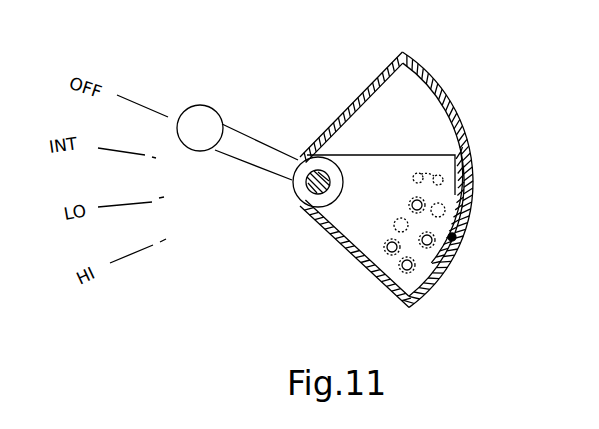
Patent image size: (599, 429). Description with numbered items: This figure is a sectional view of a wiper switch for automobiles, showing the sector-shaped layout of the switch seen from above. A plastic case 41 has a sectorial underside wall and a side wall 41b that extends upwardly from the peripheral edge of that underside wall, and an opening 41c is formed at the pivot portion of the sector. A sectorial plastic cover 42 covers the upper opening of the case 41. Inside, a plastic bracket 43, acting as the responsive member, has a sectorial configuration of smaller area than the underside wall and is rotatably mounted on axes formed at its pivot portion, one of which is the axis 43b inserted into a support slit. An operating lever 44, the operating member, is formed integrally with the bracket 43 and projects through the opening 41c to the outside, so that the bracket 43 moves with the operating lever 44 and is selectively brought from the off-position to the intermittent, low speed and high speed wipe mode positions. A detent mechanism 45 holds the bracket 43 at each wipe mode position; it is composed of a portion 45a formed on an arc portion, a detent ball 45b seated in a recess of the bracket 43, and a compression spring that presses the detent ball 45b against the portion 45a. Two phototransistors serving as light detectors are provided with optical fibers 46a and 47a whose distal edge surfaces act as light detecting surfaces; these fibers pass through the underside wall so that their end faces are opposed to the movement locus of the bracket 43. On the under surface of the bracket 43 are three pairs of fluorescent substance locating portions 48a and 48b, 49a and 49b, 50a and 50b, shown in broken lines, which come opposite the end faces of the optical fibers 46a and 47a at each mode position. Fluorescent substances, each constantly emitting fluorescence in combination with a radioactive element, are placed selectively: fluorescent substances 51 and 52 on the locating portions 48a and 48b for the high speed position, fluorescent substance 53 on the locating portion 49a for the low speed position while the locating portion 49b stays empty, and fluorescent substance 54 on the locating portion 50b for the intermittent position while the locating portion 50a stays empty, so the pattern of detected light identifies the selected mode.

The plastic case 41 is at (430, 62).
The side wall 41b is at (444, 87).
The opening 41c is at (297, 204).
The sectorial plastic cover 42 is at (377, 105).
The plastic bracket 43 is at (387, 154).
The axis 43b is at (293, 185).
The operating lever 44 is at (190, 108).
The detent mechanism 45 is at (443, 137).
The portion 45a is at (467, 163).
The detent ball 45b is at (456, 238).
The optical fiber 46a is at (413, 178).
The optical fiber 47a is at (418, 172).
The fluorescent substance locating portion 48a is at (390, 254).
The fluorescent substance locating portion 48b is at (398, 264).
The fluorescent substance locating portion 49a is at (394, 236).
The fluorescent substance locating portion 49b is at (432, 252).
The fluorescent substance locating portion 50a is at (410, 204).
The fluorescent substance locating portion 50b is at (446, 211).
The fluorescent substance 51 is at (387, 247).
The fluorescent substance 52 is at (408, 270).
The fluorescent substance 53 is at (438, 250).
The fluorescent substance 54 is at (404, 209).